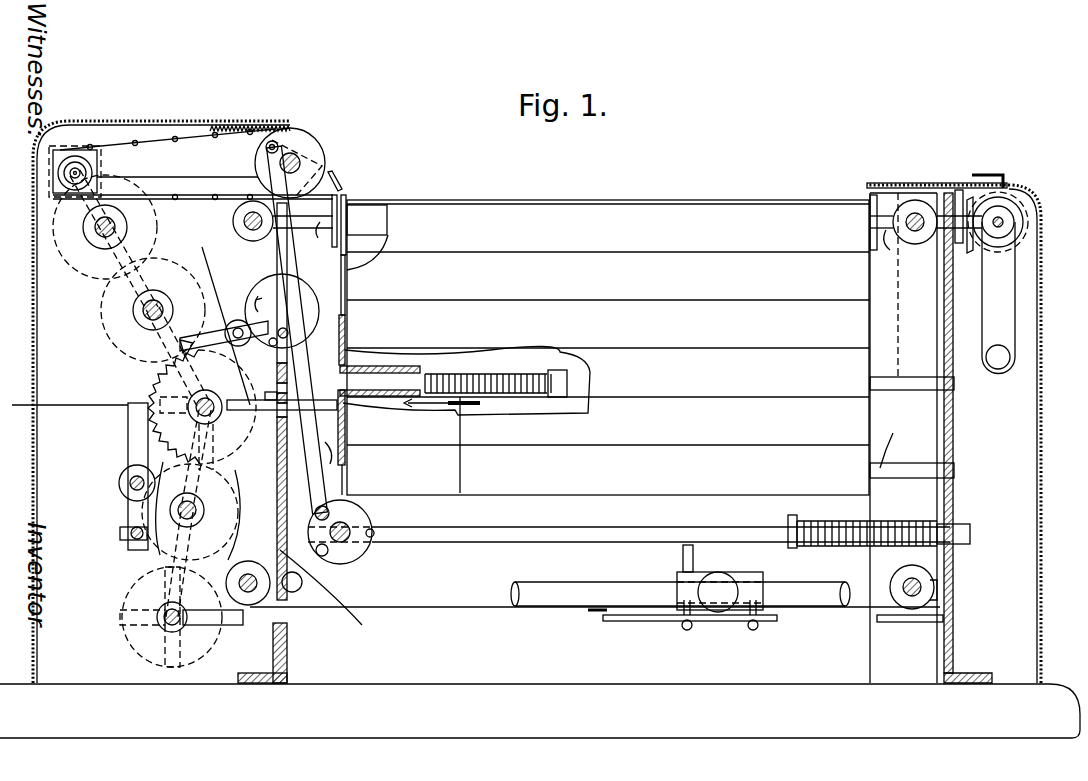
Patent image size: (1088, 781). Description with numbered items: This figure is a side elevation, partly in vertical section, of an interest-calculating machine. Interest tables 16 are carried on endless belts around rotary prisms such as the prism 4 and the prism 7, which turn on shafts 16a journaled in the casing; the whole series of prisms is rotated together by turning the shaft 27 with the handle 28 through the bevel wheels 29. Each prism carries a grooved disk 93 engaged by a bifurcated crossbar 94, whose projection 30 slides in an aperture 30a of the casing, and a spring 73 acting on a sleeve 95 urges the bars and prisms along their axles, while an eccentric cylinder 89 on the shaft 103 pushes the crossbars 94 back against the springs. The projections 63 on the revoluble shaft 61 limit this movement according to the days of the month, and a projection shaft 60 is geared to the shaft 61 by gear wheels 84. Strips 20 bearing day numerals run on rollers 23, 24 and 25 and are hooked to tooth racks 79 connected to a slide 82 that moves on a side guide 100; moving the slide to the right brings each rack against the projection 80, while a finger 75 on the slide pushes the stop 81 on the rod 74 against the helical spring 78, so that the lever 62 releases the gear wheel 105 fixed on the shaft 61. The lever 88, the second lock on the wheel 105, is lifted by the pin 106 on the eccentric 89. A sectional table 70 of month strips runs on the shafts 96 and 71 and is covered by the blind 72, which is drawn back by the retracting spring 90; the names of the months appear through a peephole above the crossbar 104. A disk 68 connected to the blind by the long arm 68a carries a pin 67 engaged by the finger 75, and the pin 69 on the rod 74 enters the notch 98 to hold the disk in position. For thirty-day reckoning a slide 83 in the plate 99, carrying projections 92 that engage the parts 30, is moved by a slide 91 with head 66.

The rotary prism 4 is at (349, 217).
The rotary prism 7 is at (64, 405).
The interest tables 16 is at (612, 222).
The rotatable shaft 16a is at (603, 345).
The longitudinal strip 20 is at (888, 200).
The roller 23 is at (233, 214).
The roller 24 is at (918, 200).
The roller 25 is at (930, 607).
The shaft 27 is at (1001, 218).
The handle 28 is at (999, 366).
The bevel wheels 29 is at (971, 198).
The projection 30 is at (228, 344).
The aperture 30a is at (275, 393).
The projection shaft 60 is at (273, 668).
The revoluble shaft 61 is at (163, 400).
The lever 62 is at (137, 436).
The projections 63 is at (218, 317).
The head 66 is at (298, 590).
The pin 67 is at (323, 558).
The disk 68 is at (350, 548).
The long arm 68a is at (292, 304).
The pin 69 is at (375, 533).
The sectional table 70 is at (197, 138).
The prismatic shaft 71 is at (306, 132).
The blind 72 is at (336, 178).
The spring 73 is at (549, 372).
The rod 74 is at (543, 533).
The finger 75 is at (683, 558).
The helical spring 78 is at (897, 524).
The tooth rack 79 is at (778, 622).
The projection 80 is at (912, 623).
The stop 81 is at (788, 521).
The slide 82 is at (748, 576).
The slide 83 is at (268, 484).
The gear wheels 84 is at (158, 551).
The lever 88 is at (147, 317).
The eccentric cylinder 89 is at (263, 291).
The retracting spring 90 is at (238, 121).
The slide 91 is at (286, 538).
The projections 92 is at (264, 446).
The disk 93 is at (347, 203).
The crossbar 94 is at (341, 268).
The sleeve 95 is at (404, 371).
The prismatic shaft 96 is at (50, 195).
The notch 98 is at (365, 528).
The plate 99 is at (348, 603).
The side guide 100 is at (572, 595).
The shaft 103 is at (290, 338).
The crossbar 104 is at (337, 173).
The gear wheel 105 is at (157, 396).
The pin 106 is at (280, 350).